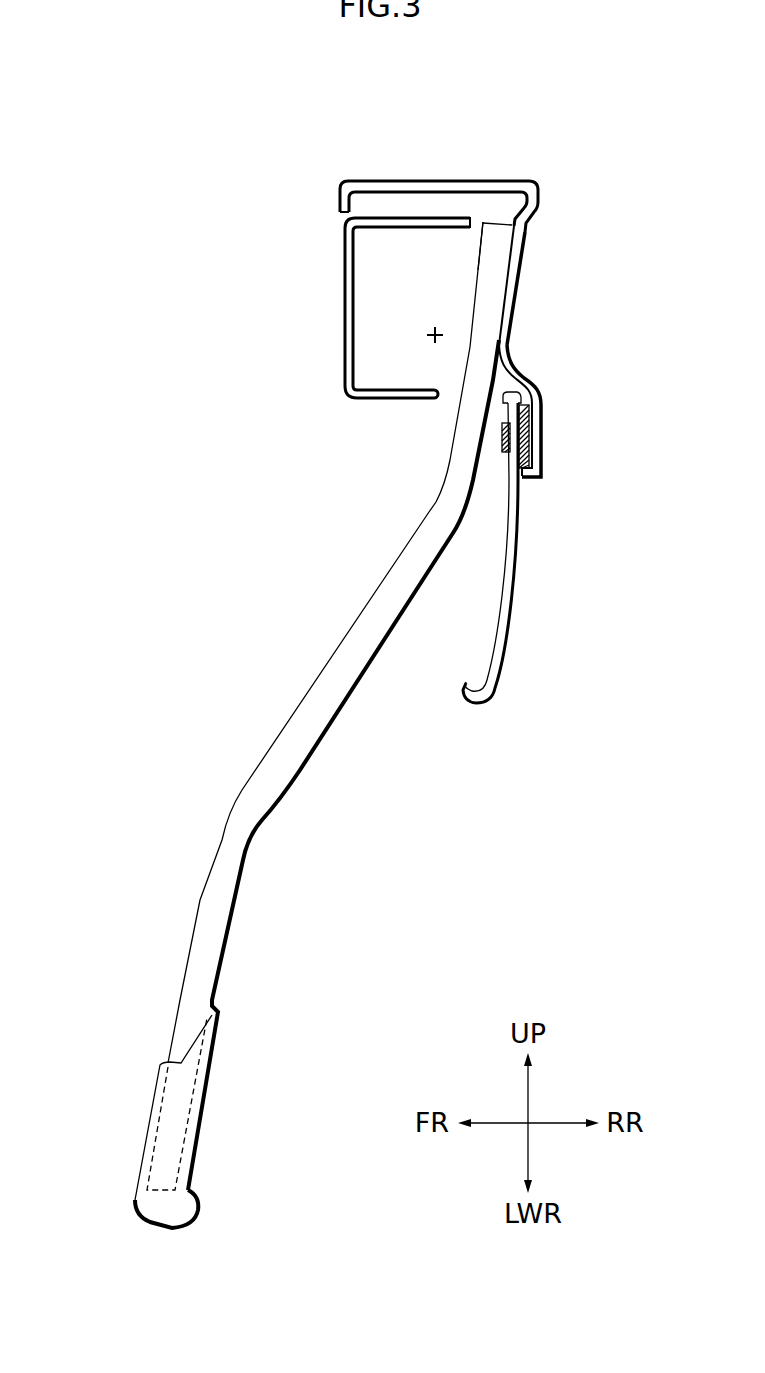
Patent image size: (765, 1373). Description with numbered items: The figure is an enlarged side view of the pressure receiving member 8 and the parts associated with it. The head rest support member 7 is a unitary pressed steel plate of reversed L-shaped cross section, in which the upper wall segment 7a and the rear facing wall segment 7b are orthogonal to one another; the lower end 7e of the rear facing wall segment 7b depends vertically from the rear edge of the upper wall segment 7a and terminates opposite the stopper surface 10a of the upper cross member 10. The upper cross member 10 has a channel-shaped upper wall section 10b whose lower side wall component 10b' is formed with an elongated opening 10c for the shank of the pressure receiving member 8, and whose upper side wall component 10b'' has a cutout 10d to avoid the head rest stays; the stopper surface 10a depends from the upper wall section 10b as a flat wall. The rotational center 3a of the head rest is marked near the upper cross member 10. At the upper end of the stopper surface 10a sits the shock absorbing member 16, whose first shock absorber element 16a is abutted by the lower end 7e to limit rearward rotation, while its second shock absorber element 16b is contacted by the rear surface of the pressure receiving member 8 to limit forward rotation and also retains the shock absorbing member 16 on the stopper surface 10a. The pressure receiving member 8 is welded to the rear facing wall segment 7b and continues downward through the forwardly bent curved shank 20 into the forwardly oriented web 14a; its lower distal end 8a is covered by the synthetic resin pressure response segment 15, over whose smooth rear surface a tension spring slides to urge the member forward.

The head rest support member 7 is at (493, 281).
The upper wall segment 7a is at (478, 180).
The rear facing wall segment 7b is at (515, 303).
The lower end 7e is at (543, 403).
The upper cross member 10 is at (422, 453).
The stopper surface 10a is at (506, 666).
The upper wall section 10b is at (291, 297).
The lower side wall component 10b' is at (317, 395).
The upper side wall component 10b'' is at (407, 252).
The elongated opening 10c is at (438, 400).
The cutout 10d is at (515, 214).
The rotational center 3a is at (425, 330).
The shock absorbing member 16 is at (507, 483).
The first shock absorber element 16a is at (530, 432).
The second shock absorber element 16b is at (501, 441).
The curved shank 20 is at (457, 529).
The pressure receiving member 8 is at (314, 827).
The lower distal end 8a is at (160, 1192).
The forwardly oriented web 14a is at (215, 913).
The pressure response segment 15 is at (133, 1173).